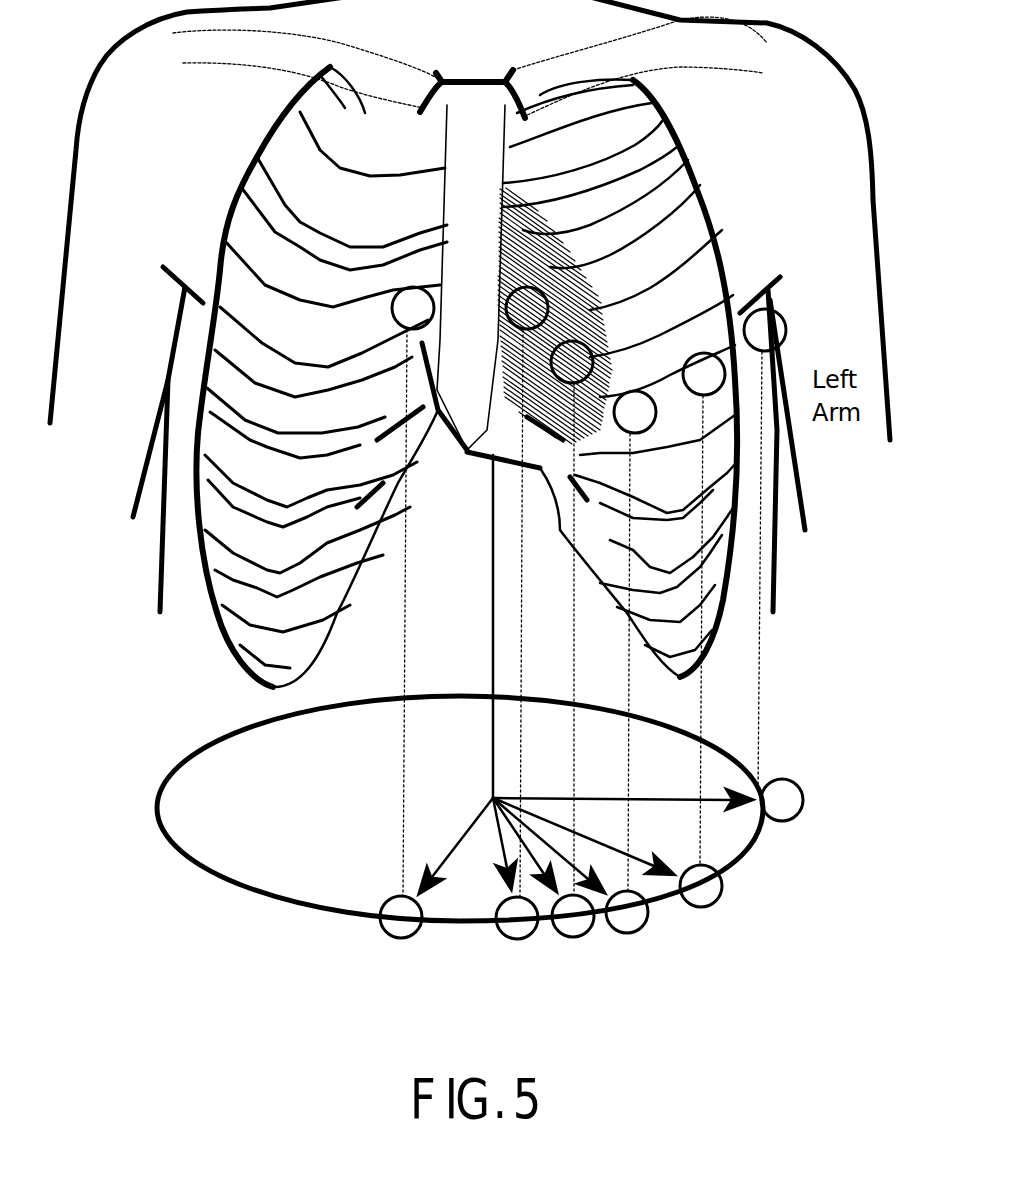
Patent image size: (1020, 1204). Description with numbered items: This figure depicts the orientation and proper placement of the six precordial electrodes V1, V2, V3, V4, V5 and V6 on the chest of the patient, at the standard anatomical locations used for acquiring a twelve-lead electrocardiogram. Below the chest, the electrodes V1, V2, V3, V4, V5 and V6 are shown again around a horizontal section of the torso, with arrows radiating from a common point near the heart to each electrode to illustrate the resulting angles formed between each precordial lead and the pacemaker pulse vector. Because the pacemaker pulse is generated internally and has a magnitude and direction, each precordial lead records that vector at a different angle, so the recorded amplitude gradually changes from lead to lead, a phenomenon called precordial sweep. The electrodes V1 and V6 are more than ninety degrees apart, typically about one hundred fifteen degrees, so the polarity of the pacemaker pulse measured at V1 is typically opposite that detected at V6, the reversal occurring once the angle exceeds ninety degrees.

The precordial electrode V1 is at (436, 612).
The precordial electrode V2 is at (520, 613).
The precordial electrode V3 is at (543, 639).
The precordial electrode V4 is at (574, 662).
The precordial electrode V5 is at (609, 630).
The precordial electrode V6 is at (648, 565).